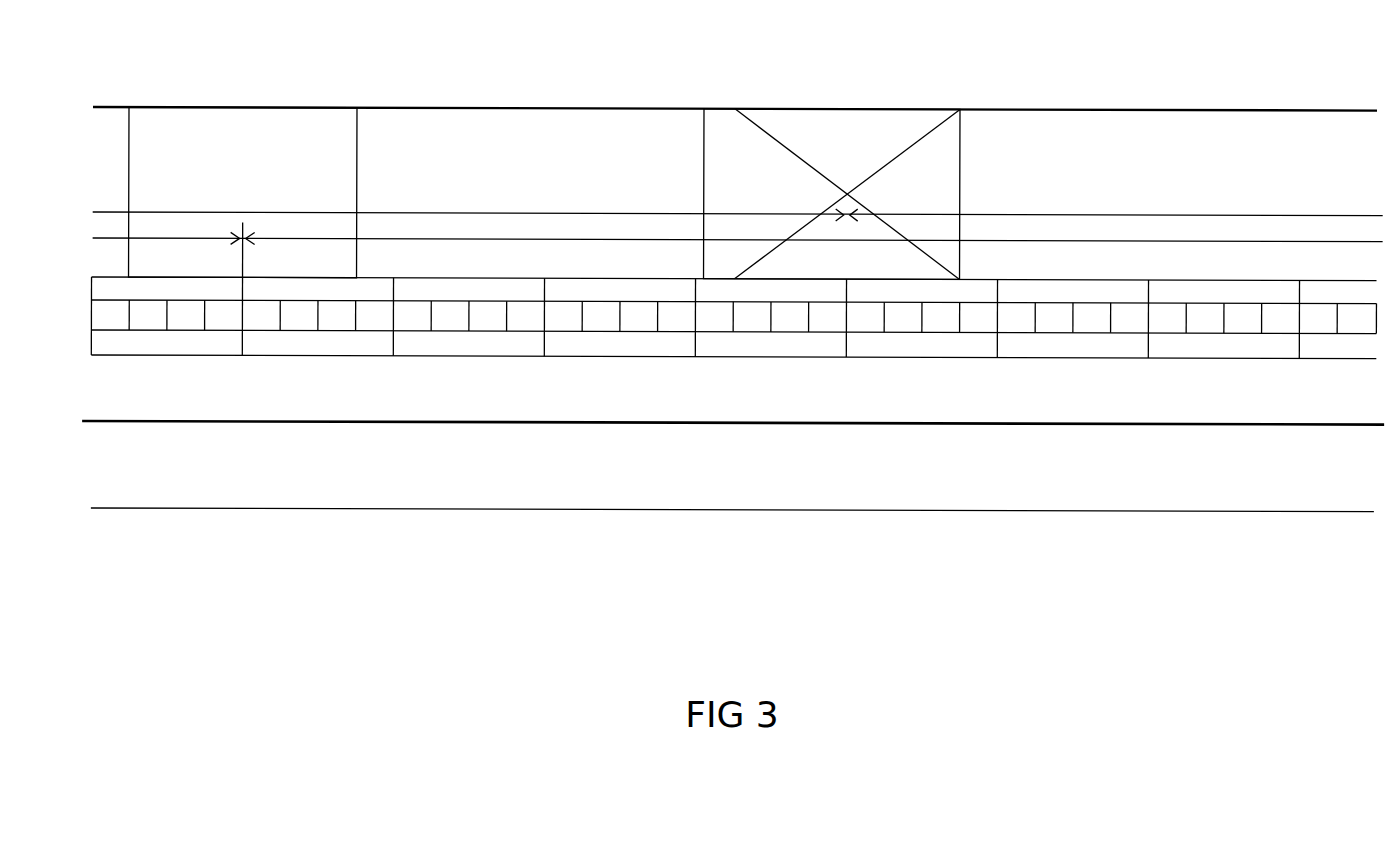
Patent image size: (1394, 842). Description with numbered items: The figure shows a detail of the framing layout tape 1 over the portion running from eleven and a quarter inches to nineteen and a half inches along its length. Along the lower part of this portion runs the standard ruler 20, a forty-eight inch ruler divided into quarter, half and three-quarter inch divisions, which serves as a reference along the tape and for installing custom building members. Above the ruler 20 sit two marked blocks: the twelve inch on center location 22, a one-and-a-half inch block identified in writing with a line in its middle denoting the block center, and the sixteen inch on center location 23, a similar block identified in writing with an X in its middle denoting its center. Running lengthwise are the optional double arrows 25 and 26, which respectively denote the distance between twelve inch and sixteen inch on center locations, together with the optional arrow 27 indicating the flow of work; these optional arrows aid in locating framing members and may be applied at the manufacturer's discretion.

The framing layout tape 1 is at (559, 106).
The standard ruler 20 is at (533, 312).
The 12 inch on center location 22 is at (231, 110).
The 16 inch on center location 23 is at (848, 112).
The double arrow indicating distance between 12 inch on center locations 25 is at (1038, 243).
The double arrow indicating distance between 16 inch on center locations 26 is at (1174, 210).
The arrow indicating flow of work 27 is at (833, 425).